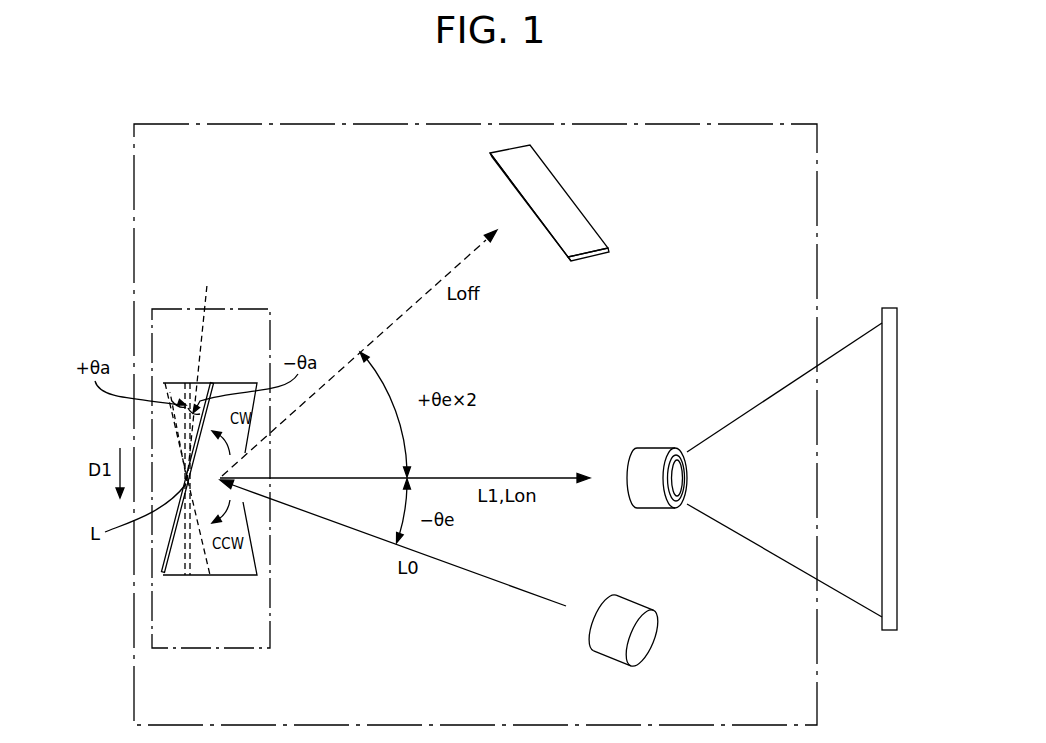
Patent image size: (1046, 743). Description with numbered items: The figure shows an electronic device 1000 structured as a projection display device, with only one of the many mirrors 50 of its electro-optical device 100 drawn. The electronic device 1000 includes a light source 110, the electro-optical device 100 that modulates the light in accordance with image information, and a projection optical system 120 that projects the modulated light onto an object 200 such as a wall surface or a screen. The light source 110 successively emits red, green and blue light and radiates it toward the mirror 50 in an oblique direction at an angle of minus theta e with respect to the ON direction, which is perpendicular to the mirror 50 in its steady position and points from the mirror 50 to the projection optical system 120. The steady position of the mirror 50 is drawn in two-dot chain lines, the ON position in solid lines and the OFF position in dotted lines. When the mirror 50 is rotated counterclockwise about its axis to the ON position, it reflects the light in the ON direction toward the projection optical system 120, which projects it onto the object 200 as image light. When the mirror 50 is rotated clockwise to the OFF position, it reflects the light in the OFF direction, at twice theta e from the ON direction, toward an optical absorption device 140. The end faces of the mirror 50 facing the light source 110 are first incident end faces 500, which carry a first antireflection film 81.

The electronic device 1000 is at (787, 124).
The electro-optical device 100 is at (245, 308).
The mirror 50 is at (221, 383).
The first incident end faces 500 is at (210, 491).
The first antireflection film 81 is at (165, 578).
The optical absorption device 140 is at (585, 213).
The projection optical system 120 is at (662, 448).
The light source 110 is at (595, 638).
The object 200 is at (888, 630).